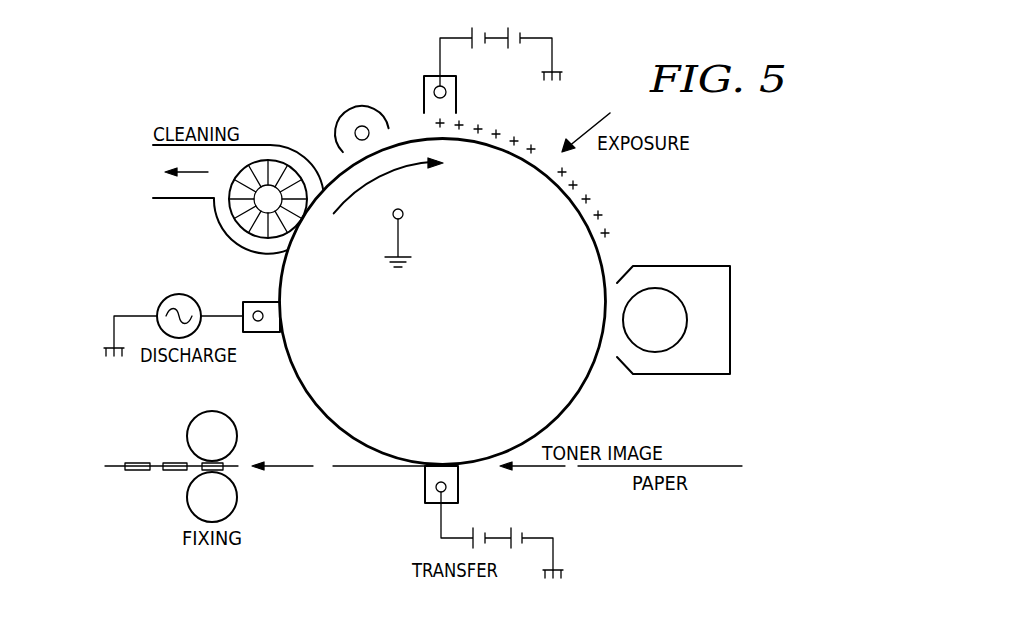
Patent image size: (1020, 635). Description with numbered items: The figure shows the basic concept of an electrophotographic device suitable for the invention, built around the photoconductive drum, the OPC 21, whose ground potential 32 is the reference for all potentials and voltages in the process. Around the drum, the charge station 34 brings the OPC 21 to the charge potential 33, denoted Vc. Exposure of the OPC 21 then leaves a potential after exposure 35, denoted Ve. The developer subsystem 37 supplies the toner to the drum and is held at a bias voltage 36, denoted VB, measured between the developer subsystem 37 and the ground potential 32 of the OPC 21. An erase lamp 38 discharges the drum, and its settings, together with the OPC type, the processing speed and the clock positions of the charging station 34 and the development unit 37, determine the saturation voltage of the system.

The OPC 21 is at (454, 358).
The ground potential 32 is at (393, 215).
The charge potential 33 is at (446, 131).
The charge station 34 is at (447, 92).
The potential after exposure 35 is at (556, 177).
The bias voltage 36 is at (688, 320).
The developer subsystem 37 is at (708, 266).
The erase lamp 38 is at (359, 126).